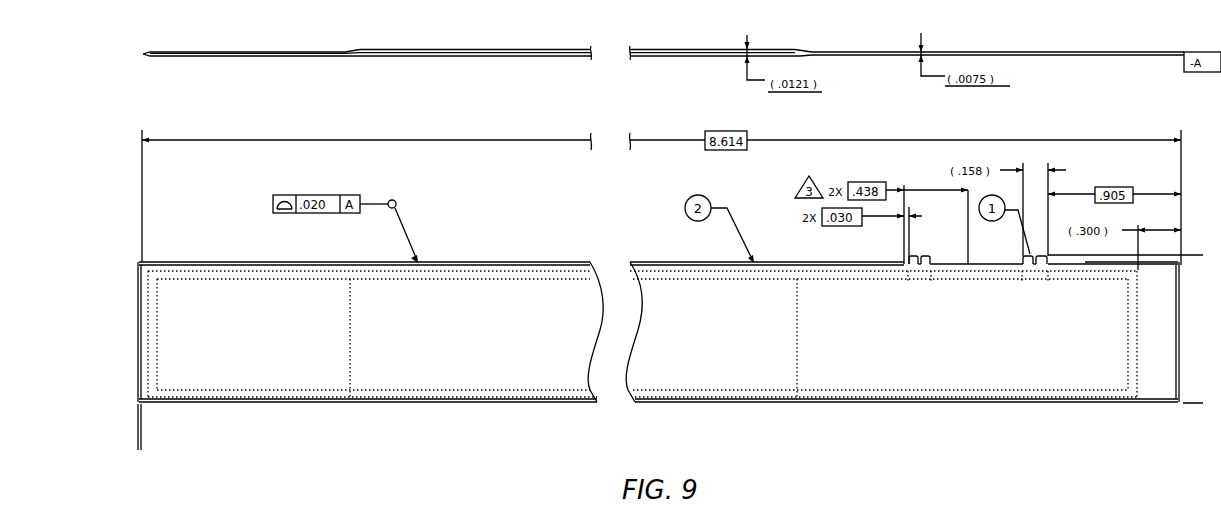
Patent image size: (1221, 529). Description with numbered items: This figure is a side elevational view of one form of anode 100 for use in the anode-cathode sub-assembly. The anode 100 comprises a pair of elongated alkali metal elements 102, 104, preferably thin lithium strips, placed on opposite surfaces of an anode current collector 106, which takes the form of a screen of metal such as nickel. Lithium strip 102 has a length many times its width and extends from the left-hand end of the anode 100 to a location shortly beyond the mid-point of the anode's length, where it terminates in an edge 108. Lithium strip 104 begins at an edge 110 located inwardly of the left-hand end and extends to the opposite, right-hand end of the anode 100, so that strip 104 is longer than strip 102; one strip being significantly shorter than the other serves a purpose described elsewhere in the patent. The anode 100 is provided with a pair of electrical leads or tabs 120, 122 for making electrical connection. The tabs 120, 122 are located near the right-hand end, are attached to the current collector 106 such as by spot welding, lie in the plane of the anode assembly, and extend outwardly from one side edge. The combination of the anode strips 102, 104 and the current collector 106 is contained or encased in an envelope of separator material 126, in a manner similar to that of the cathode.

The anode 100 is at (652, 80).
The alkali metal element 102 is at (316, 57).
The alkali metal element 104 is at (1038, 56).
The anode current collector 106 is at (972, 341).
The edge 108 is at (797, 346).
The edge 110 is at (350, 349).
The electrical lead or tab 120 is at (928, 256).
The electrical lead or tab 122 is at (1043, 257).
The envelope of separator material 126 is at (145, 267).